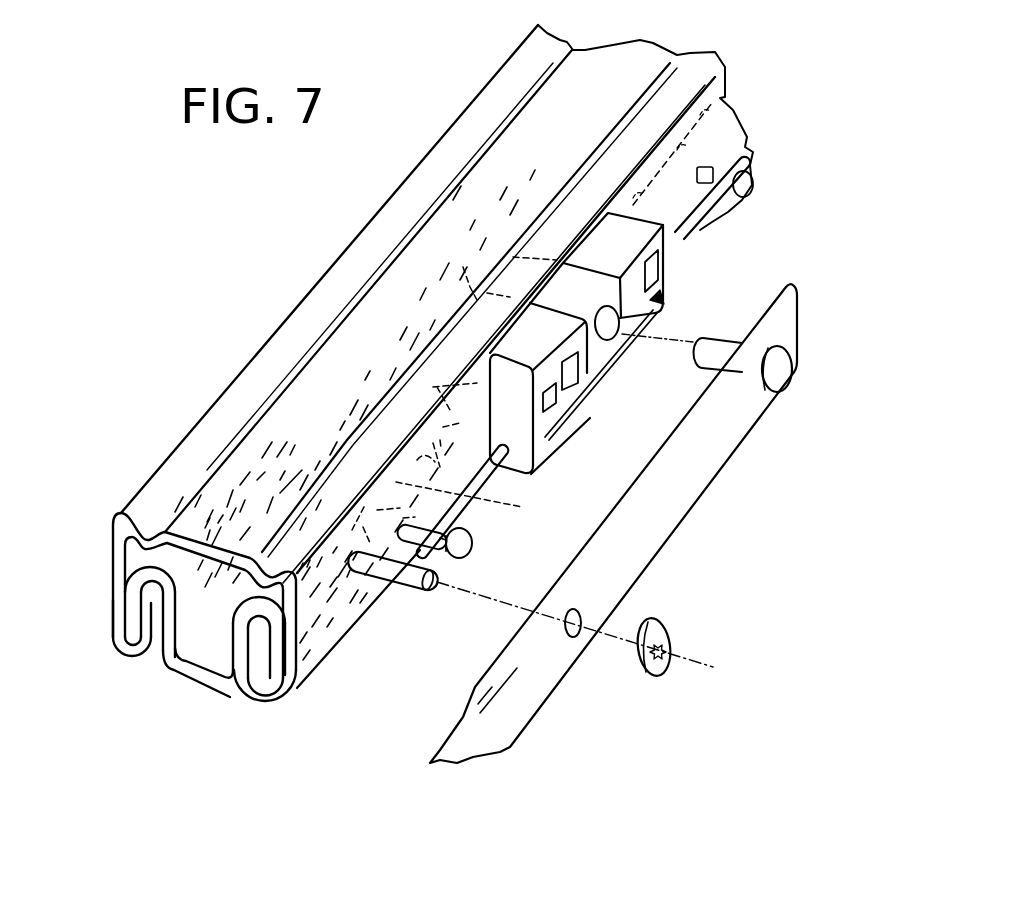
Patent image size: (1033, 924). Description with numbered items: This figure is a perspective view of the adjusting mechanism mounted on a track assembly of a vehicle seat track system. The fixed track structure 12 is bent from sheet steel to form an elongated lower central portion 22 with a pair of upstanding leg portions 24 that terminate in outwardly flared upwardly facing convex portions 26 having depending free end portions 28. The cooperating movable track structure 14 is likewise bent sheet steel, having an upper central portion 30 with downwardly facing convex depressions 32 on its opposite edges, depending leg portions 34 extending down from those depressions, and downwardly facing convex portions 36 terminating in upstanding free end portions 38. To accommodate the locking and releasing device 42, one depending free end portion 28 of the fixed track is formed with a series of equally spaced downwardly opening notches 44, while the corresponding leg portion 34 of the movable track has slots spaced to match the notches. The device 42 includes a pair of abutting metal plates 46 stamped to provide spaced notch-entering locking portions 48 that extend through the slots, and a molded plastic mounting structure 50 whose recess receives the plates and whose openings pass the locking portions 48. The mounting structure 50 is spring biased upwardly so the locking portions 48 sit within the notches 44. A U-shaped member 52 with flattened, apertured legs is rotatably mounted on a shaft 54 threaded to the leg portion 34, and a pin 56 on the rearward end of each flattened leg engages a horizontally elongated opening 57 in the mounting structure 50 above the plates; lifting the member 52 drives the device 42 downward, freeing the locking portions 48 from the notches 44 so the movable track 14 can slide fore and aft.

The fixed track structure 12 is at (188, 692).
The movable track structure 14 is at (290, 302).
The lower central portion 22 is at (222, 683).
The upstanding leg portions 24 is at (163, 627).
The outwardly flared upwardly facing convex portions 26 is at (128, 558).
The depending free end portions 28 is at (258, 640).
The upper central portion 30 is at (287, 407).
The downwardly facing convex depressions 32 is at (185, 465).
The depending leg portions 34 is at (113, 590).
The downwardly facing convex portions 36 is at (120, 650).
The upstanding free end portions 38 is at (265, 668).
The locking and releasing device 42 is at (662, 296).
The notches 44 is at (508, 487).
The abutting metal plates 46 is at (598, 386).
The locking portions 48 is at (468, 310).
The mounting structure 50 is at (633, 238).
The U-shaped member 52 is at (513, 723).
The shaft 54 is at (437, 577).
The pin 56 is at (713, 358).
The horizontally elongated opening 57 is at (648, 315).